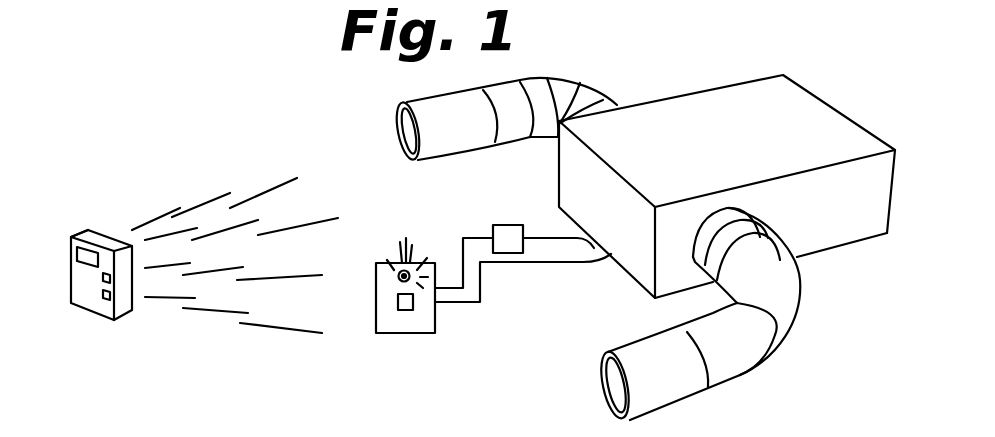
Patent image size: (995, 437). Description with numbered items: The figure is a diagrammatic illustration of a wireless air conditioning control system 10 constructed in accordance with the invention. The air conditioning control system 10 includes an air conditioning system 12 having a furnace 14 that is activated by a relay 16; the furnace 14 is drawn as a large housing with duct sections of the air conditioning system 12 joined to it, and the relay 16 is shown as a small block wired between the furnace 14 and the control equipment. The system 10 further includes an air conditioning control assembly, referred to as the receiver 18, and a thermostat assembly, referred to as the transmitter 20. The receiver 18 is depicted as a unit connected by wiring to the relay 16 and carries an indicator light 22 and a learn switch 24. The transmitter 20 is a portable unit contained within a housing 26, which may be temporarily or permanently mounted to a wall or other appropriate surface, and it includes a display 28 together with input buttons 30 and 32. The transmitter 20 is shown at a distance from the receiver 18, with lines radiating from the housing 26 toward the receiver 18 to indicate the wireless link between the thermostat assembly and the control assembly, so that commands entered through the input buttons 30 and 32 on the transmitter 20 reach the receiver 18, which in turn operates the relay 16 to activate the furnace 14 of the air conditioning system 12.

The air conditioning control system 10 is at (170, 100).
The air conditioning system 12 is at (743, 385).
The furnace 14 is at (698, 105).
The relay 16 is at (503, 225).
The receiver 18 is at (393, 303).
The transmitter 20 is at (103, 275).
The indicator light 22 is at (390, 277).
The learn switch 24 is at (398, 300).
The housing 26 is at (89, 240).
The display 28 is at (78, 254).
The input button 30 is at (117, 277).
The input button 32 is at (105, 298).